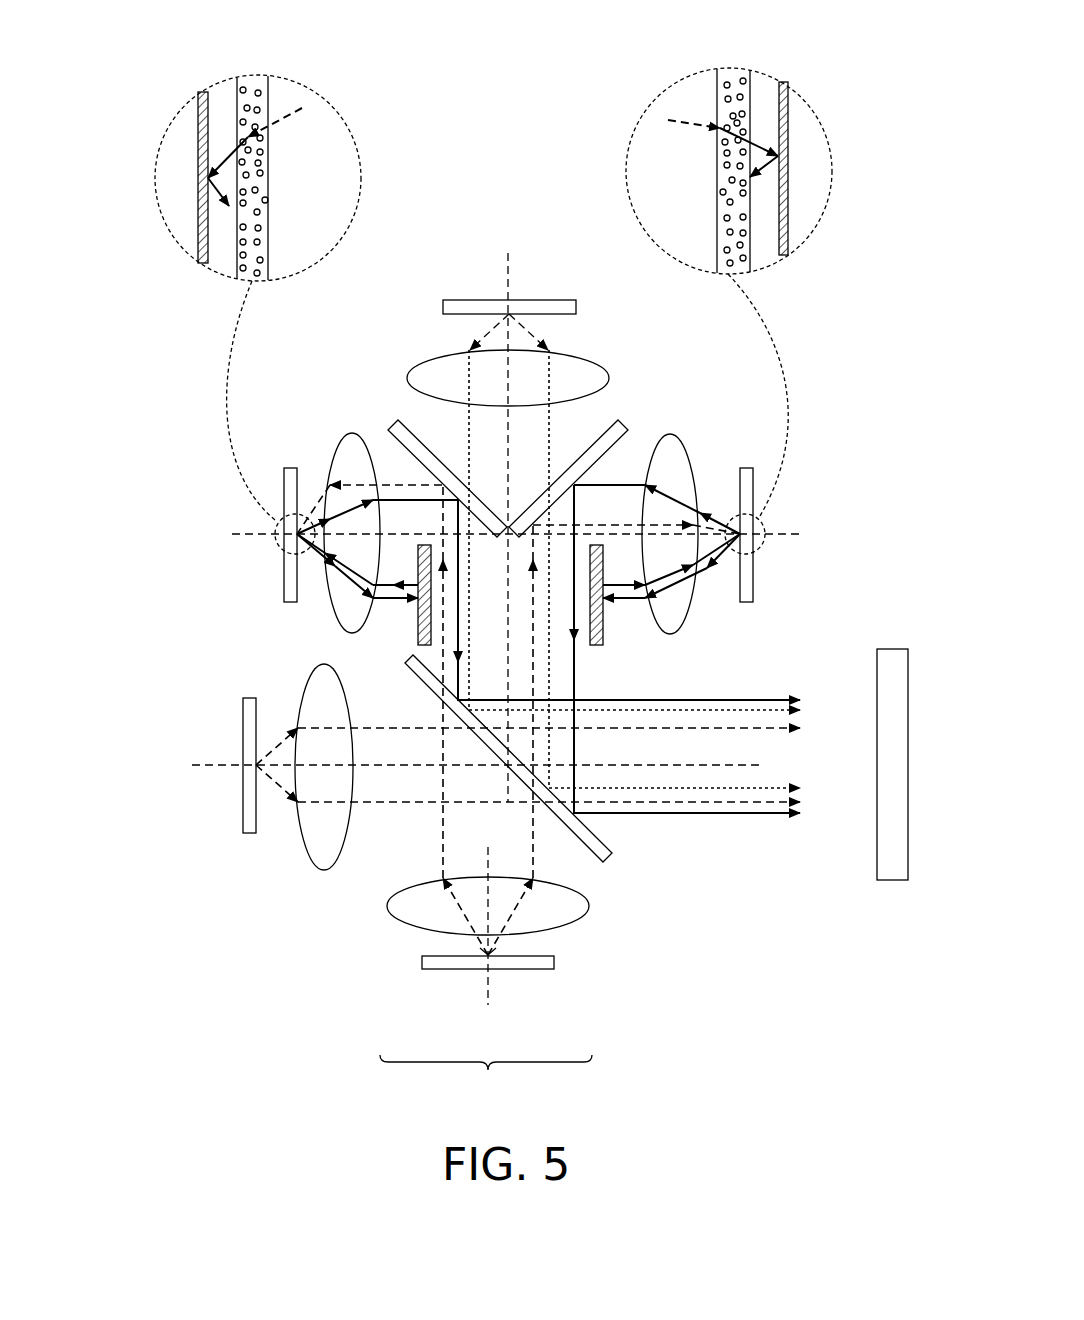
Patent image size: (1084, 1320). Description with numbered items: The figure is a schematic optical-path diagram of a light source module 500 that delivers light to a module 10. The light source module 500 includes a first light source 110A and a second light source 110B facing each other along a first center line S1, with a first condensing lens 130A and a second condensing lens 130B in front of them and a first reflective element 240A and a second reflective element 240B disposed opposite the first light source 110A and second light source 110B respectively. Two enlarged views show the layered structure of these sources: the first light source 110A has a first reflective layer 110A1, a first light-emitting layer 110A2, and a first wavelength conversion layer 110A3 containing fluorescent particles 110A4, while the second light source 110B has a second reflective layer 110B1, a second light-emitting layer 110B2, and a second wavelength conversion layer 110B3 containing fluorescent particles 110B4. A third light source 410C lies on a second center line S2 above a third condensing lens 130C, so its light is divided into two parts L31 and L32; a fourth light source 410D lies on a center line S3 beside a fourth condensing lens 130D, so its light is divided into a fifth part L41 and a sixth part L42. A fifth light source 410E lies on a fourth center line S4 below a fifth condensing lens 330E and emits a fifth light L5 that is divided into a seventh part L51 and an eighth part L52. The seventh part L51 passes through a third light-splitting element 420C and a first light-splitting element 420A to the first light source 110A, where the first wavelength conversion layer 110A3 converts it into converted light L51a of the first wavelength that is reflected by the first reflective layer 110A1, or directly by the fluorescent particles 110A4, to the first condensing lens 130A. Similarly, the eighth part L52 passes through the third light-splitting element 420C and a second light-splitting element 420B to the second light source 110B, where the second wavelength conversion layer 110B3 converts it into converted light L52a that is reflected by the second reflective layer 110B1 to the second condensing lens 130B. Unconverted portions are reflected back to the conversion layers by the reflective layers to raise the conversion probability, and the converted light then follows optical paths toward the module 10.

The light source module 500 is at (470, 150).
The module 10 is at (888, 880).
The first light source 110A is at (284, 580).
The first reflective layer 110A1 is at (202, 263).
The first light-emitting layer 110A2 is at (224, 264).
The first wavelength conversion layer 110A3 is at (250, 272).
The fluorescent particles 110A4 is at (258, 92).
The second light source 110B is at (755, 583).
The second reflective layer 110B1 is at (783, 255).
The second light-emitting layer 110B2 is at (763, 263).
The second wavelength conversion layer 110B3 is at (738, 270).
The fluorescent particles 110B4 is at (728, 82).
The first condensing lens 130A is at (352, 433).
The second condensing lens 130B is at (670, 434).
The third condensing lens 130C is at (608, 378).
The fourth condensing lens 130D is at (324, 870).
The first reflective element 240A is at (418, 630).
The second reflective element 240B is at (603, 630).
The fifth condensing lens 330E is at (590, 905).
The third light source 410C is at (470, 300).
The fourth light source 410D is at (243, 815).
The fifth light source 410E is at (555, 963).
The first light-splitting element 420A is at (393, 425).
The second light-splitting element 420B is at (623, 424).
The third light-splitting element 420C is at (612, 856).
The first center line S1 is at (500, 535).
The second center line S2 is at (511, 516).
The center line S3 is at (458, 767).
The fourth center line S4 is at (487, 937).
The part of third light L31 is at (530, 340).
The part of third light L32 is at (460, 322).
The fifth part L41 is at (287, 728).
The sixth part L42 is at (287, 802).
The fifth light L5 is at (486, 1077).
The seventh part L51 is at (283, 118).
The eighth part L52 is at (697, 118).
The converted light L51a is at (210, 195).
The converted light L52a is at (768, 145).